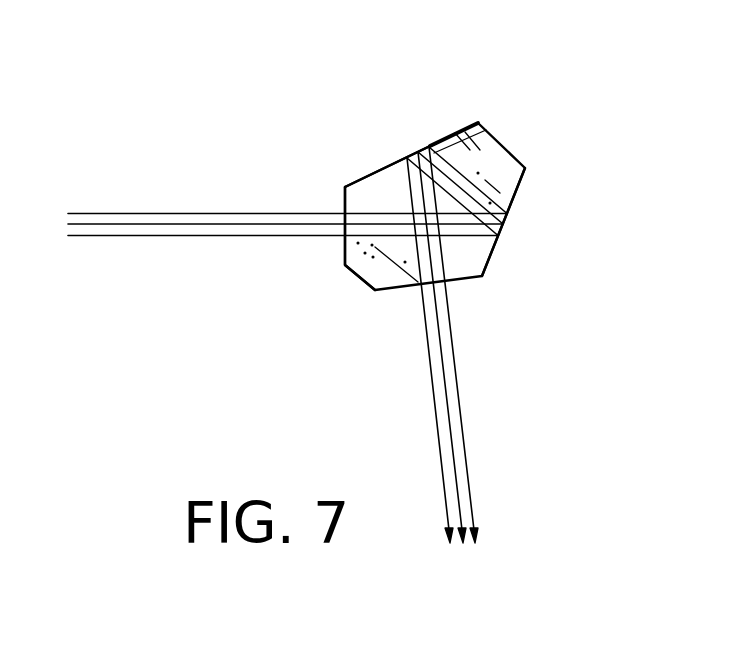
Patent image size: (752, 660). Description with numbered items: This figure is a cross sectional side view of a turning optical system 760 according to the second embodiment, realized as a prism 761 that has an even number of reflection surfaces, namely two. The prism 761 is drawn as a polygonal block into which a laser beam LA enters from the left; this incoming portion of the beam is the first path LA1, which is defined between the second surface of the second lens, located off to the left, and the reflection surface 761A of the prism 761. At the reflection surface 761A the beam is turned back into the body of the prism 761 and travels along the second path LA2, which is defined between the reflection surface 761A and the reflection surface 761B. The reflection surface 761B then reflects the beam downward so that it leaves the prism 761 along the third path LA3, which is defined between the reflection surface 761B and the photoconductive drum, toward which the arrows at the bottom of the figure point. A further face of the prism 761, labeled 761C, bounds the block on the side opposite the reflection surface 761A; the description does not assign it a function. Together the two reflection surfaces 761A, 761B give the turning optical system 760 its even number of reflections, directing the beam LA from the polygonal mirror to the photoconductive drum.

The turning optical system 760 is at (530, 104).
The prism 761 is at (445, 142).
The reflection surface 761A is at (480, 262).
The reflection surface 761B is at (386, 176).
The side surface 761C is at (345, 250).
The laser beam LA is at (207, 174).
The first path LA1 is at (110, 213).
The second path LA2 is at (497, 194).
The third path LA3 is at (462, 412).